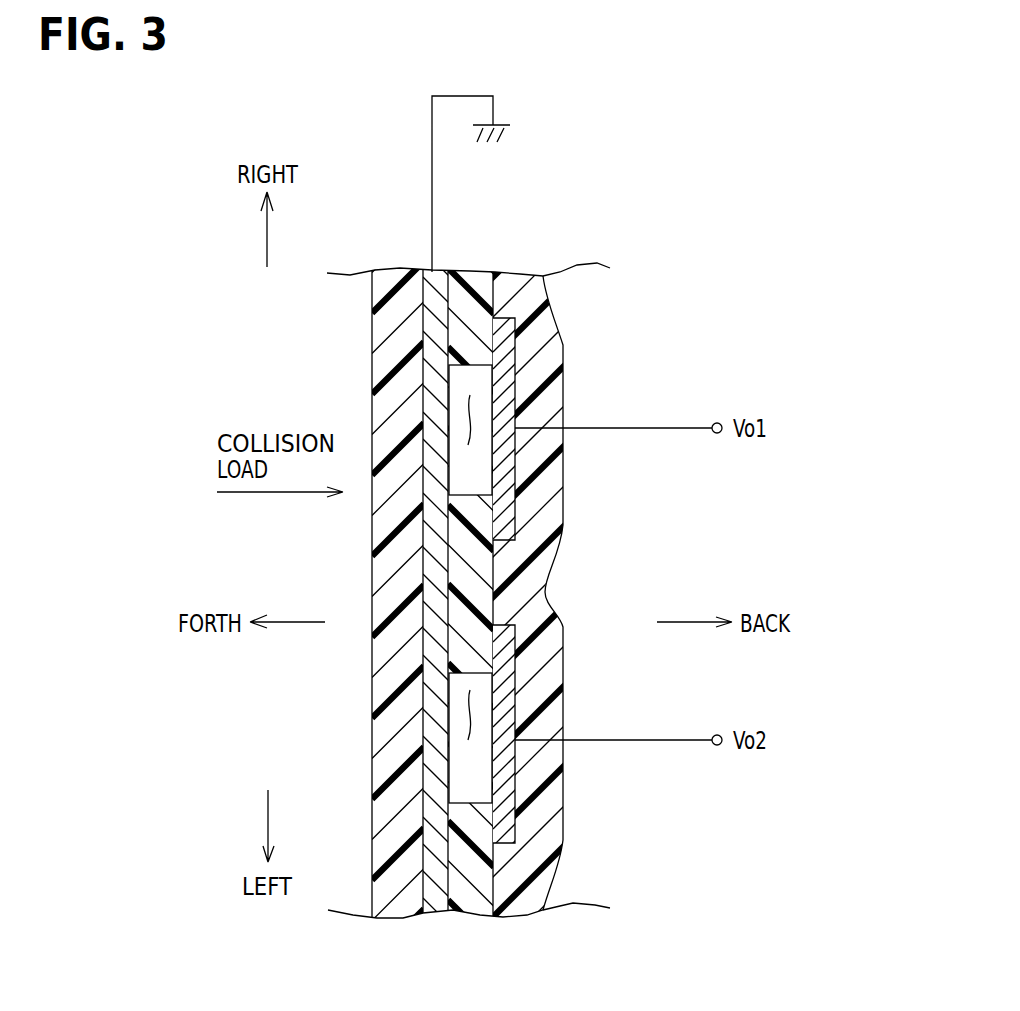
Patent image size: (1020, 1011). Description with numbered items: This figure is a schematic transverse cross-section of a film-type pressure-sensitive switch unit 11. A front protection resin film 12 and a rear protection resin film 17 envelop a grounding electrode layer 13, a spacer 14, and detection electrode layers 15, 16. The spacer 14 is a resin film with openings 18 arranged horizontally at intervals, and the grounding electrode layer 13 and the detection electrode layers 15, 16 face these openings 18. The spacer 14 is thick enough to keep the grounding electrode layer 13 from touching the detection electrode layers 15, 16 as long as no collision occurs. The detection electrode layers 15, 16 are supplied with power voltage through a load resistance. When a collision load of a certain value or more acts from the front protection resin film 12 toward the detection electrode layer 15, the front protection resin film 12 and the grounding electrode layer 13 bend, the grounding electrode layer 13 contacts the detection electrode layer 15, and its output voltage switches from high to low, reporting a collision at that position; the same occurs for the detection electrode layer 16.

The pressure-sensitive switch unit 11 is at (564, 233).
The front protection resin film 12 is at (387, 343).
The grounding electrode layer 13 is at (438, 900).
The spacer 14 is at (463, 897).
The detection electrode layer 15 is at (507, 358).
The detection electrode layer 16 is at (507, 680).
The rear protection resin film 17 is at (522, 883).
The openings 18 is at (470, 584).